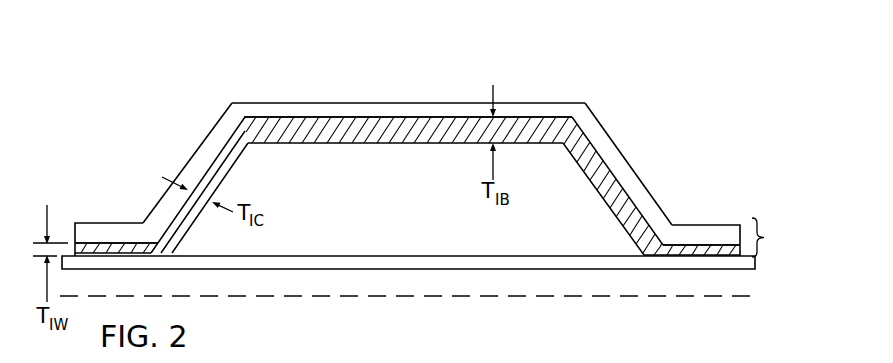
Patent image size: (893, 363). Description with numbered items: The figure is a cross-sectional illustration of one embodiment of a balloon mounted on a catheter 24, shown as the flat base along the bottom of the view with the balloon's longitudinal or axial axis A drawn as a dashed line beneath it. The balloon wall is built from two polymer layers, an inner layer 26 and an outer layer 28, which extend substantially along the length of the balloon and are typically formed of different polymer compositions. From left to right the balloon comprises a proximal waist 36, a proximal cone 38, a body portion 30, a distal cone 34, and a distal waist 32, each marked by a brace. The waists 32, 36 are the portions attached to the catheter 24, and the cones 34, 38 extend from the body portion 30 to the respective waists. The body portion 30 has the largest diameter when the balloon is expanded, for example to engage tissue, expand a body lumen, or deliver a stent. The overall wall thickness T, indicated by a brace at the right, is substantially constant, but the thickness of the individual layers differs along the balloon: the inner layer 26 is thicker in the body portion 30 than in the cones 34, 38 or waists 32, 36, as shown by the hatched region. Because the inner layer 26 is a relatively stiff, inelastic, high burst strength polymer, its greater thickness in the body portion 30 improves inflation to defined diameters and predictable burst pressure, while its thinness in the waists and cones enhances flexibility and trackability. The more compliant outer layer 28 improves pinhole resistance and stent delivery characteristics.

The catheter 24 is at (726, 260).
The inner polymer layer 26 is at (212, 176).
The outer polymer layer 28 is at (396, 112).
The body portion 30 is at (590, 78).
The distal waist 32 is at (752, 208).
The distal cone 34 is at (588, 100).
The proximal waist 36 is at (68, 209).
The proximal cone 38 is at (229, 98).
The longitudinal axis A is at (414, 296).
The balloon wall thickness T is at (767, 237).